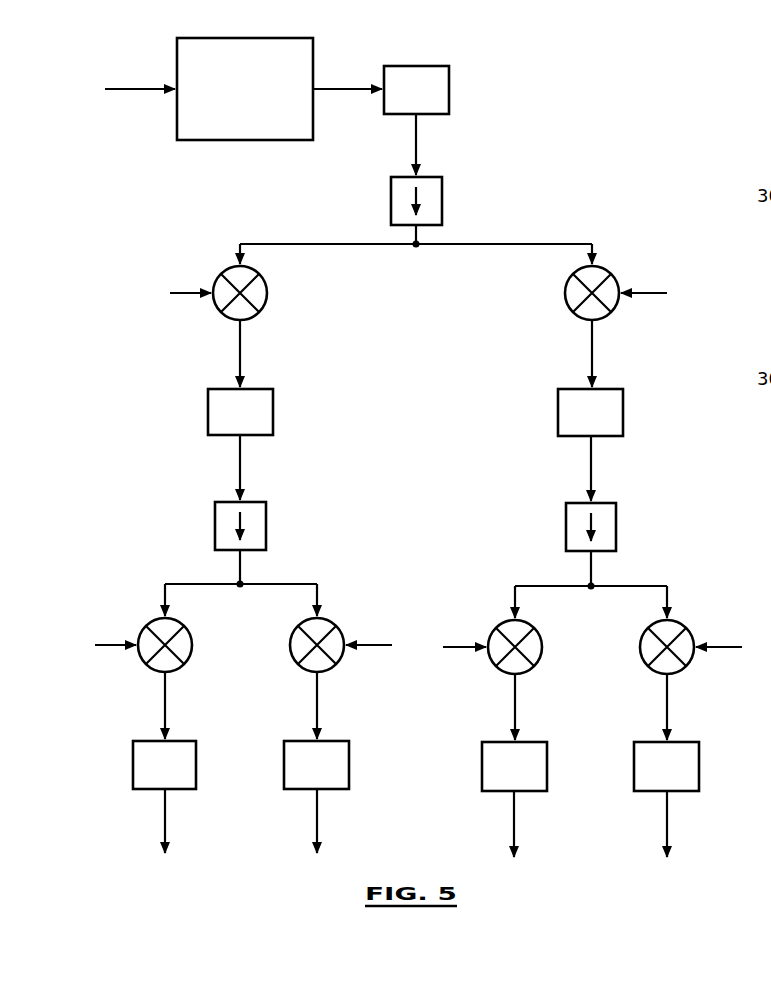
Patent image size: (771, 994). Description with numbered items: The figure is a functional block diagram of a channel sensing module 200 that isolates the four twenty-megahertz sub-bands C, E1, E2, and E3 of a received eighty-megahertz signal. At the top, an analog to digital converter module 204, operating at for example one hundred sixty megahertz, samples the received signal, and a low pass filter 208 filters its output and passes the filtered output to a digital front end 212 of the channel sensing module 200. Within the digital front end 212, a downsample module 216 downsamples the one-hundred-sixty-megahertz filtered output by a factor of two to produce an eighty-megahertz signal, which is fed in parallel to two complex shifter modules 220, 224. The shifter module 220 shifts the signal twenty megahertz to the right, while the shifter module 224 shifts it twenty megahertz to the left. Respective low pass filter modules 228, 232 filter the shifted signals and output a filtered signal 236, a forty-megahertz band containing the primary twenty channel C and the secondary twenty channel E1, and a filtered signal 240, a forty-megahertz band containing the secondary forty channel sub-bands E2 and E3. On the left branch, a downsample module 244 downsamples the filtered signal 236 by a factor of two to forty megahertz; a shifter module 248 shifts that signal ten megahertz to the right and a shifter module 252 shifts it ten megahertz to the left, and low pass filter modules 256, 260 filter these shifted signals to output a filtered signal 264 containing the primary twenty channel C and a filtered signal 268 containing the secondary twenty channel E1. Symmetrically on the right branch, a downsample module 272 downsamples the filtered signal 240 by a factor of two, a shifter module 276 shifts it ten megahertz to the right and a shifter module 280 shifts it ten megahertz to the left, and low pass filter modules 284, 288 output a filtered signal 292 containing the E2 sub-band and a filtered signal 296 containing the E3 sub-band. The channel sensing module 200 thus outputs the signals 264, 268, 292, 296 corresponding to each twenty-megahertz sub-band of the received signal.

The channel sensing module 200 is at (564, 121).
The analog to digital converter module 204 is at (240, 141).
The low pass filter 208 is at (449, 90).
The digital front end 212 is at (126, 238).
The downsample module 216 is at (391, 201).
The shifter module 220 is at (267, 293).
The shifter module 224 is at (569, 300).
The low pass filter module 228 is at (273, 412).
The low pass filter module 232 is at (558, 416).
The filtered signal 236 is at (240, 463).
The filtered signal 240 is at (591, 463).
The downsample module 244 is at (266, 526).
The shifter module 248 is at (146, 626).
The shifter module 252 is at (336, 626).
The low pass filter module 256 is at (196, 765).
The low pass filter module 260 is at (349, 765).
The filtered signal 264 is at (165, 834).
The filtered signal 268 is at (317, 834).
The downsample module 272 is at (566, 531).
The shifter module 276 is at (497, 628).
The shifter module 280 is at (686, 628).
The low pass filter module 284 is at (547, 766).
The low pass filter module 288 is at (700, 735).
The filtered signal 292 is at (514, 836).
The filtered signal 296 is at (667, 836).